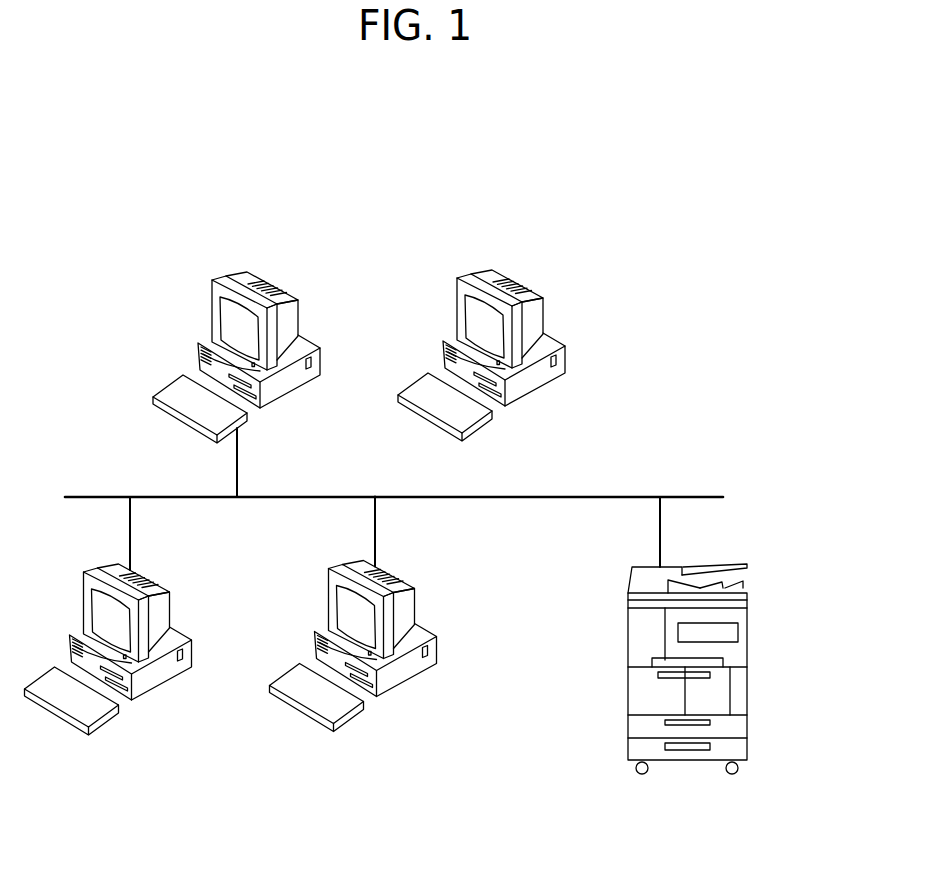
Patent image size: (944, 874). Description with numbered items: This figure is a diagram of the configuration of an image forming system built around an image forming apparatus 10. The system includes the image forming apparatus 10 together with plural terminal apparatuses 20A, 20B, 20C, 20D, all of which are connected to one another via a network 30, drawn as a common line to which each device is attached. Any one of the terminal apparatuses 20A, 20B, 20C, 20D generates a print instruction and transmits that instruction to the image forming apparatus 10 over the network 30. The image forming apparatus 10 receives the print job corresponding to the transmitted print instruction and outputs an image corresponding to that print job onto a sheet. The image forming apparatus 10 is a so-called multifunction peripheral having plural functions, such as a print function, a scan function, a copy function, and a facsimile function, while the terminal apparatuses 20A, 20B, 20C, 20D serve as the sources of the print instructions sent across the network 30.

The image forming apparatus 10 is at (670, 762).
The terminal apparatus 20A is at (303, 315).
The terminal apparatus 20B is at (548, 315).
The terminal apparatus 20C is at (173, 605).
The terminal apparatus 20D is at (417, 605).
The network 30 is at (599, 484).